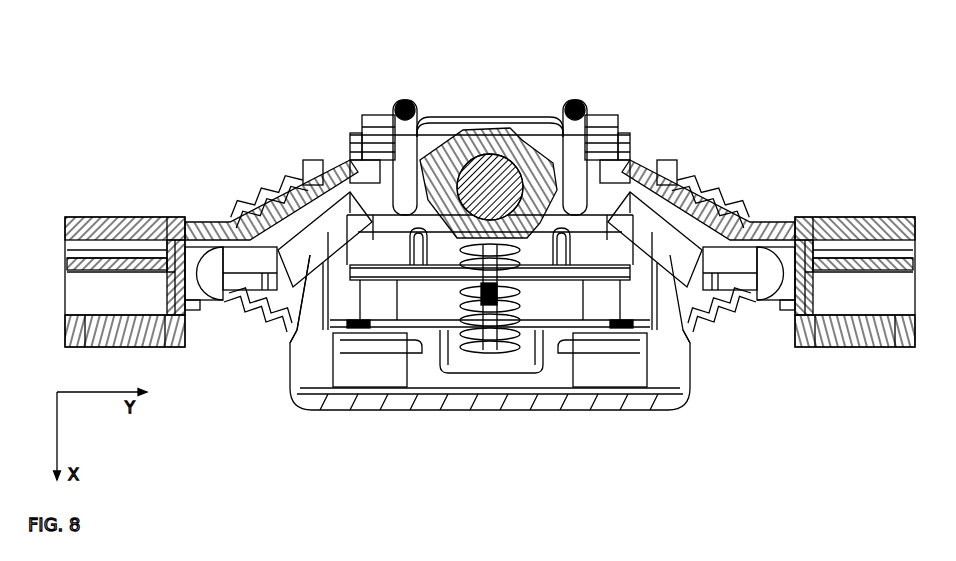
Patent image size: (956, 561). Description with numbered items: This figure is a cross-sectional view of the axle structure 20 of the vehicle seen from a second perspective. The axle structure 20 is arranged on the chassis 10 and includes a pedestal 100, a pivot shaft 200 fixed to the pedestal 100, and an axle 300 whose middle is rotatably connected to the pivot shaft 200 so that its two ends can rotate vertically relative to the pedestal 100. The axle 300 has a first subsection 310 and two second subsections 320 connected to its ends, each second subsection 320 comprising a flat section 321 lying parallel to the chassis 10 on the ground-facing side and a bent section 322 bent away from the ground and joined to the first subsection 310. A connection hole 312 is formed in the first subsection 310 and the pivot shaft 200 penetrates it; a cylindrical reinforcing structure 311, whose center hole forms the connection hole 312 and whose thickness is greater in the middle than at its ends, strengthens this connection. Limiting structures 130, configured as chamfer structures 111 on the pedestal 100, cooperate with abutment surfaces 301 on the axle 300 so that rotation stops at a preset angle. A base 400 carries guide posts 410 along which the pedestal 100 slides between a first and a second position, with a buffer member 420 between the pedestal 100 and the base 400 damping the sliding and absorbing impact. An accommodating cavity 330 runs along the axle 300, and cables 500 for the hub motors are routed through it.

The axle structure 20 is at (471, 243).
The axle 300 is at (471, 203).
The first subsection 310 is at (353, 158).
The second subsection 320 is at (490, 222).
The flat section 321 is at (200, 232).
The bent section 322 is at (273, 187).
The cables 500 is at (400, 100).
The connection hole 312 is at (462, 125).
The reinforcing structure 311 is at (493, 140).
The pivot shaft 200 is at (520, 137).
The accommodating cavity 330 is at (313, 258).
The pedestal 100 is at (313, 390).
The chassis 10 is at (360, 273).
The base 400 is at (437, 330).
The guide posts 410 is at (597, 300).
The buffer member 420 is at (490, 340).
The chamfer structures 111 is at (490, 365).
The limiting structures 130 is at (490, 324).
The abutment surfaces 301 is at (641, 256).